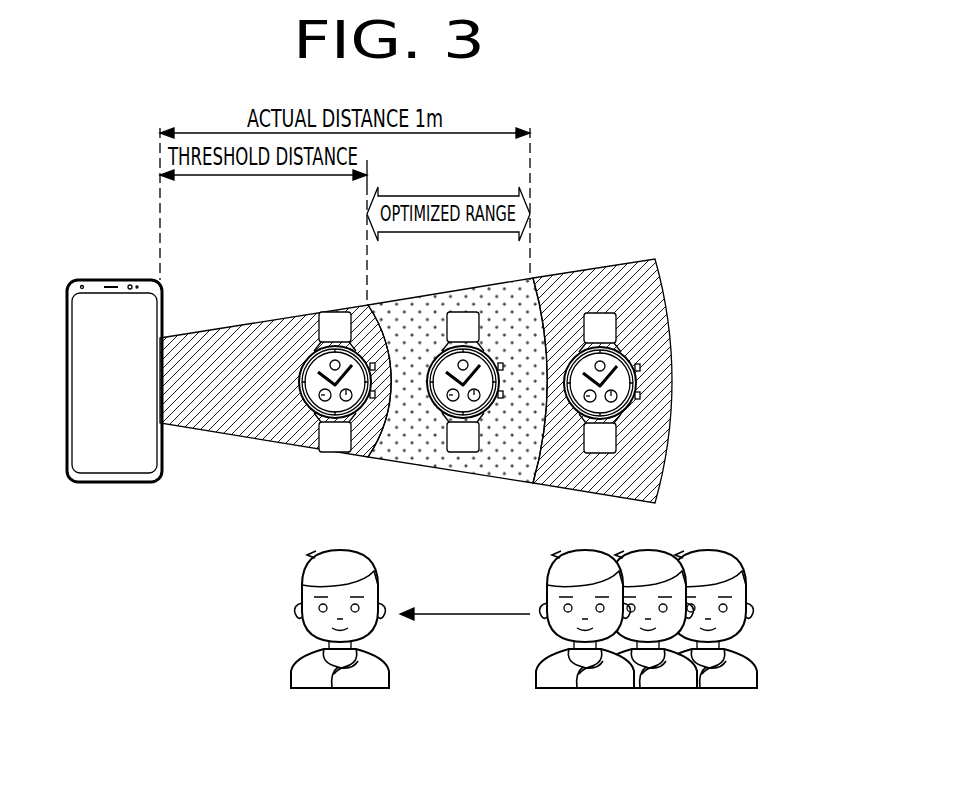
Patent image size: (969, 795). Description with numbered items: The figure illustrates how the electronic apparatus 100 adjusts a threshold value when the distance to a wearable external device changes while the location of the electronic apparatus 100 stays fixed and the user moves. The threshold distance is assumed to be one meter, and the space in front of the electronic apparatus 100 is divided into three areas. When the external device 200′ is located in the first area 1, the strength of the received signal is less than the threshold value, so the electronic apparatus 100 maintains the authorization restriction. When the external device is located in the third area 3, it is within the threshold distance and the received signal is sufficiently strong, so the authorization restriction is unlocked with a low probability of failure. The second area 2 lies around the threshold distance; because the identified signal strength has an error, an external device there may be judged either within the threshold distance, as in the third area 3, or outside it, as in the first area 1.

The electronic apparatus 100 is at (109, 278).
The external device located in first area 200′ is at (598, 318).
The first area 1 is at (553, 470).
The second area 2 is at (400, 452).
The third area 3 is at (272, 425).